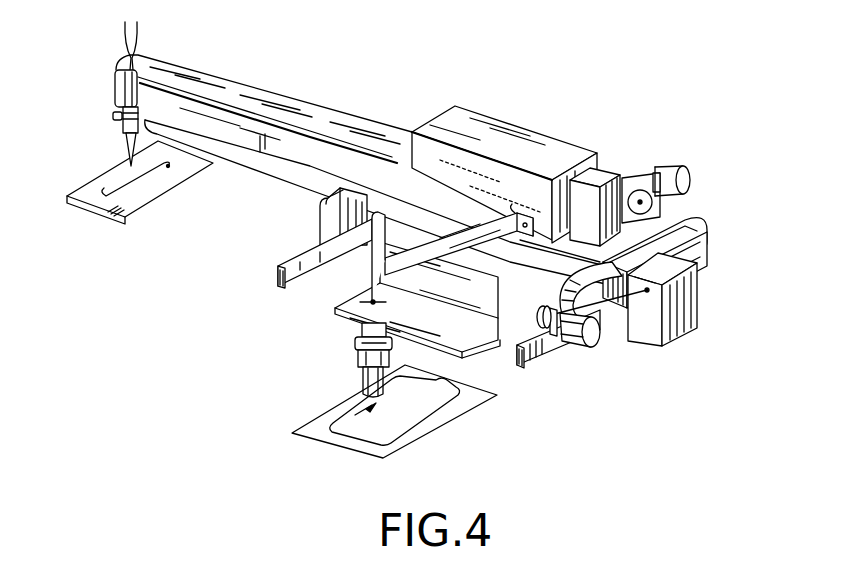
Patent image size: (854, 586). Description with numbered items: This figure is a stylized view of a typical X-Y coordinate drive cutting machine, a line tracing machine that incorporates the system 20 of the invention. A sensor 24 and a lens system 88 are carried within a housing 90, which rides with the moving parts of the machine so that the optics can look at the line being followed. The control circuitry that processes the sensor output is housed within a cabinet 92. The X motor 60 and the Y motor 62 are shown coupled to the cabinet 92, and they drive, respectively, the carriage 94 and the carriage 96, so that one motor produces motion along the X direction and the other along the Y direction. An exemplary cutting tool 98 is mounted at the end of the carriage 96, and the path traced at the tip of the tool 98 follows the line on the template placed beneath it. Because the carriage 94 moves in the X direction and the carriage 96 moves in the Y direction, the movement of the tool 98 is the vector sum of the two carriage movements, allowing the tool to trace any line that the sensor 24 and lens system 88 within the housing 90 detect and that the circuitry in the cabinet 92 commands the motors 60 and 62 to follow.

The system 20 is at (404, 84).
The sensor 24 is at (358, 362).
The X motor 60 is at (575, 345).
The Y motor 62 is at (667, 170).
The lens system 88 is at (363, 383).
The housing 90 is at (354, 345).
The cabinet 92 is at (673, 330).
The carriage 94 is at (693, 252).
The carriage 96 is at (507, 133).
The cutting tool 98 is at (125, 147).